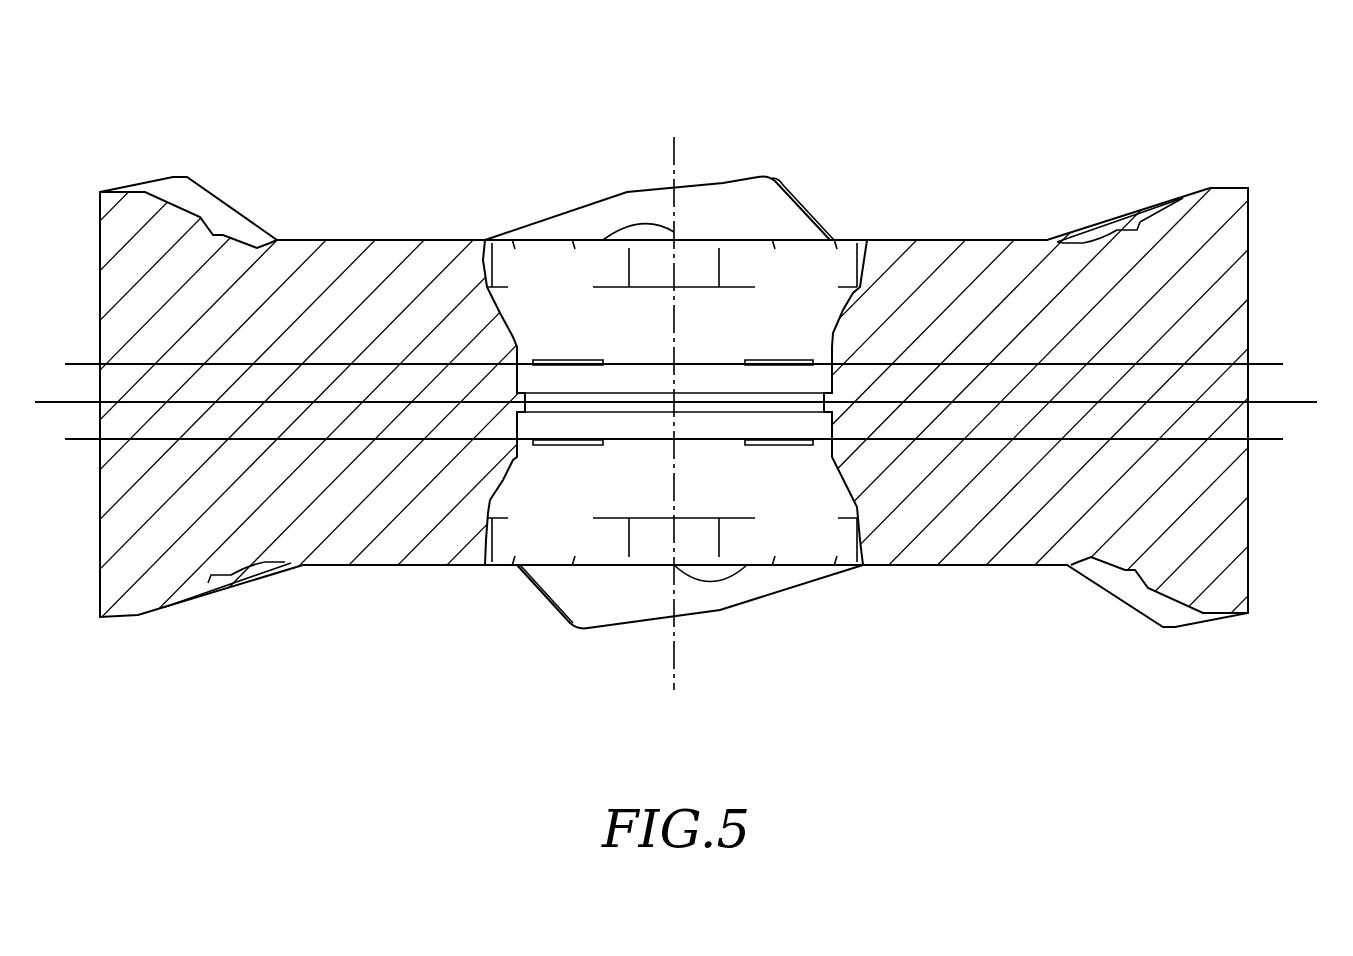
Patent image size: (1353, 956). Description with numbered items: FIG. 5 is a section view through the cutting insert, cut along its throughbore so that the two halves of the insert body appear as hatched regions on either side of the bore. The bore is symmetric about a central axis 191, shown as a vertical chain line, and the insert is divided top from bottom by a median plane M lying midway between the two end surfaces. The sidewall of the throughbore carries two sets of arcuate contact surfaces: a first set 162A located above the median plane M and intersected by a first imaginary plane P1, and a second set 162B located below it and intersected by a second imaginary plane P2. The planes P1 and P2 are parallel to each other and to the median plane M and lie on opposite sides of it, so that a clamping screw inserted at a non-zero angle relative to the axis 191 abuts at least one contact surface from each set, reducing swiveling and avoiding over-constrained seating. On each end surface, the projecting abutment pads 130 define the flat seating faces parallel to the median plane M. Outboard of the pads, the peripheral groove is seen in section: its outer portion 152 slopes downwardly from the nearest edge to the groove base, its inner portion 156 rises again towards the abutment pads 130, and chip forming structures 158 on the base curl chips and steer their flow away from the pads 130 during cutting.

The abutment pads 130 is at (362, 240).
The outer portion 152 is at (1173, 197).
The inner portion 156 is at (1070, 243).
The chip forming structures 158 is at (1127, 227).
The first set of arcuate contact surfaces 162A is at (570, 360).
The second set of arcuate contact surfaces 162B is at (570, 443).
The central axis 191 is at (675, 151).
The first imaginary plane P1 is at (693, 362).
The second imaginary plane P2 is at (693, 438).
The median plane M is at (692, 397).